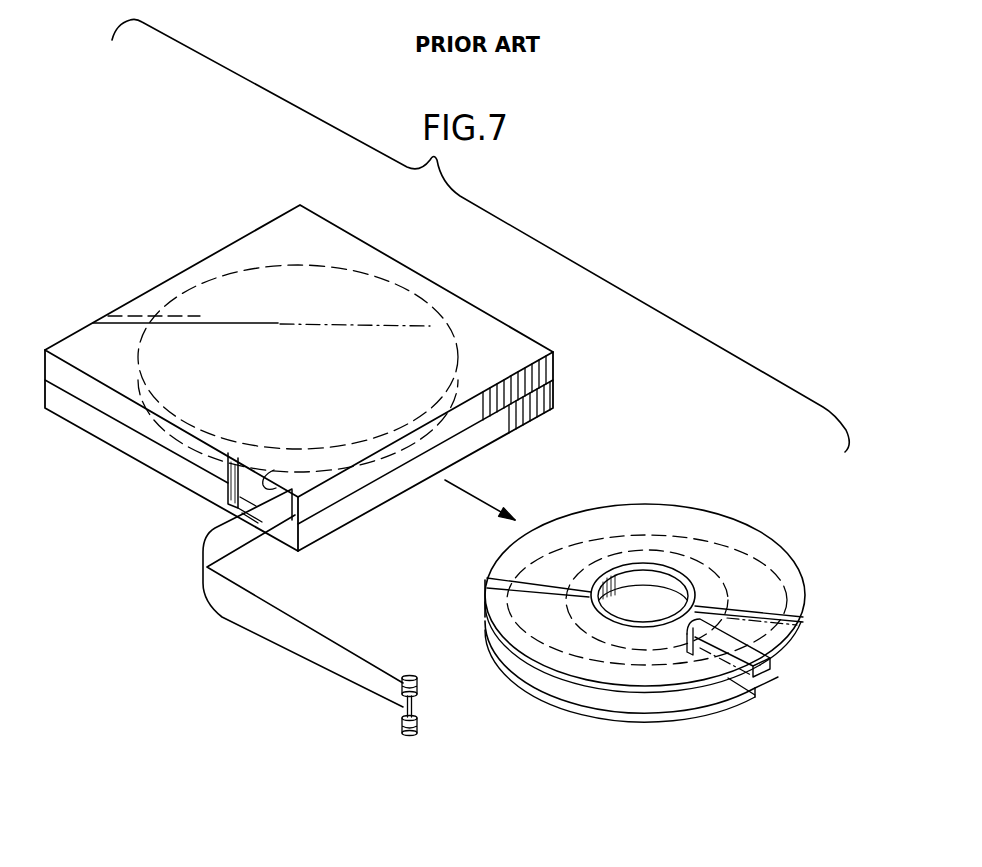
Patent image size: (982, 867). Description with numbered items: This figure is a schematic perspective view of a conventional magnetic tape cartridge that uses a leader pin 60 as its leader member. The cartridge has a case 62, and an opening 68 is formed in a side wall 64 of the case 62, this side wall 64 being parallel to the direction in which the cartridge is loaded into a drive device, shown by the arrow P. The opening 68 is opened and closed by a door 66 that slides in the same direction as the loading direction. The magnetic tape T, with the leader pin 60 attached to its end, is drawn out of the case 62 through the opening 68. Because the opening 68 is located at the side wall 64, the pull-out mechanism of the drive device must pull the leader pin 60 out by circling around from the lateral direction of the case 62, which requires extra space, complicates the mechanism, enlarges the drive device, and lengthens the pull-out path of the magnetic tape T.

The leader pin 60 is at (415, 706).
The case 62 is at (413, 270).
The side wall 64 is at (105, 431).
The door 66 is at (240, 502).
The opening 68 is at (273, 470).
The magnetic tape T is at (324, 660).
The direction of loading P is at (481, 498).